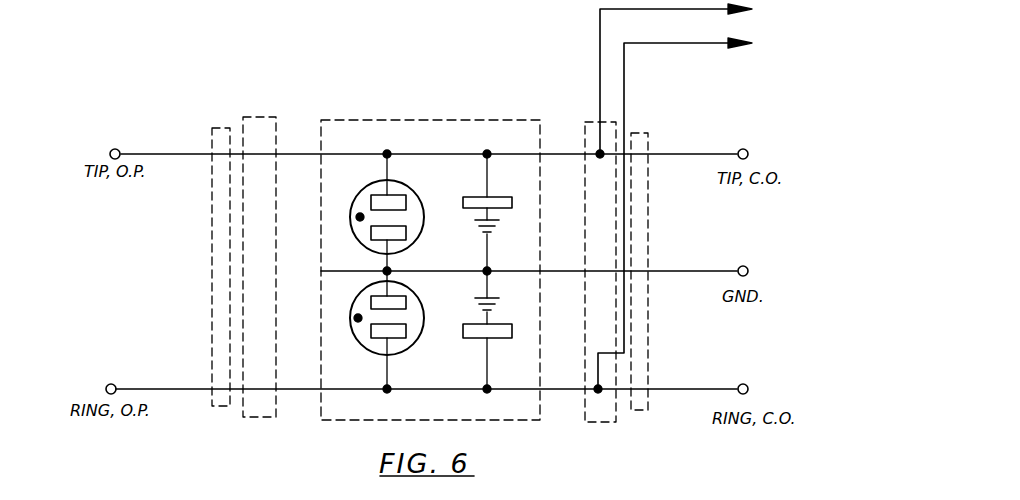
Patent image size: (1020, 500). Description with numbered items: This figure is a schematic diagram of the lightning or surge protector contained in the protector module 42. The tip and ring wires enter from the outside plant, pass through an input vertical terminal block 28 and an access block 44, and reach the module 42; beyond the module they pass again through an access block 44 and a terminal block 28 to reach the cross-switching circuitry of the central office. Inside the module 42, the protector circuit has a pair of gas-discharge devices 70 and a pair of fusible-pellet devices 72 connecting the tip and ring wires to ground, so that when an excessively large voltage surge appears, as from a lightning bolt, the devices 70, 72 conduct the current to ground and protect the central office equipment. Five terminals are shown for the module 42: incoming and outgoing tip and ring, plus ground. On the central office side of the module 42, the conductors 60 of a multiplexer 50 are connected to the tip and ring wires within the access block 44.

The input vertical terminal block 28 is at (214, 130).
The protector module 42 is at (425, 119).
The access block 44 is at (259, 118).
The multiplexer 50 is at (739, 26).
The conductor 60 is at (623, 74).
The gas-discharge device 70 is at (410, 190).
The fusible-pellet device 72 is at (478, 225).